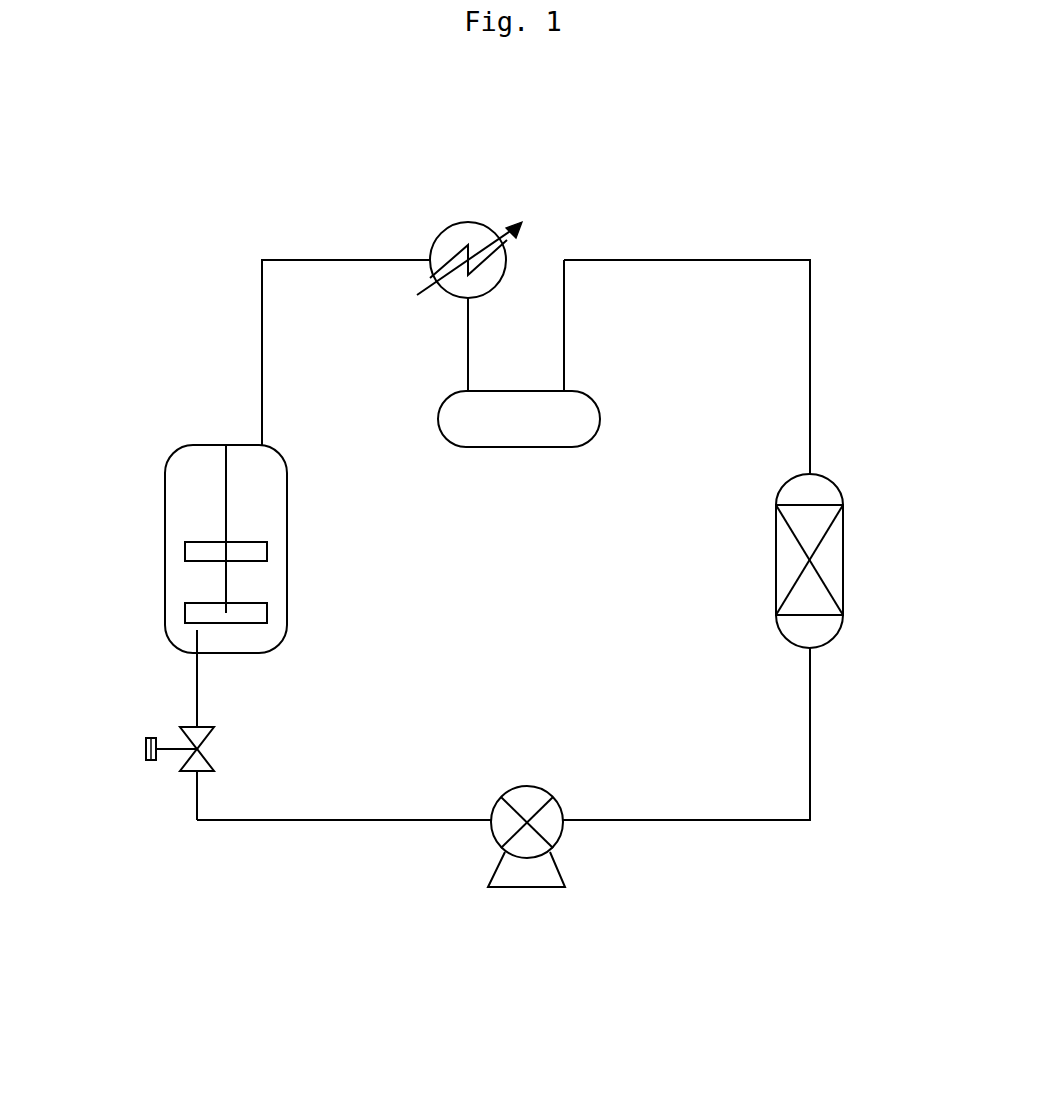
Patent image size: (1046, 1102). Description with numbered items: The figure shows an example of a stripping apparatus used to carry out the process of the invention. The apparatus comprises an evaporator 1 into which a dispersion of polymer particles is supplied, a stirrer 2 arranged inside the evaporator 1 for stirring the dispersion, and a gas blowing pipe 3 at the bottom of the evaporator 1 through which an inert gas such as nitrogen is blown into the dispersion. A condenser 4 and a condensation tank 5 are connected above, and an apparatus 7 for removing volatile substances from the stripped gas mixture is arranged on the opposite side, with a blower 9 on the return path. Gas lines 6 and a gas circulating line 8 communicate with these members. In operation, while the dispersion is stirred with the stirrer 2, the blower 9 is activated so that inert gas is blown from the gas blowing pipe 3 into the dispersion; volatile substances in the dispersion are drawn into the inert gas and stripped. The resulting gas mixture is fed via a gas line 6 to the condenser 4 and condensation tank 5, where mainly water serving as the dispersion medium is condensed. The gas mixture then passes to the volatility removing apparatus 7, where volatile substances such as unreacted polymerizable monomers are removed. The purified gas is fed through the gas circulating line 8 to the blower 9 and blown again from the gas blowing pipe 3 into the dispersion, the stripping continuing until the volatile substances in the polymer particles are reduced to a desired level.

The evaporator 1 is at (165, 487).
The stirrer 2 is at (195, 552).
The gas blowing pipe 3 is at (197, 638).
The condenser 4 is at (441, 233).
The condensation tank 5 is at (502, 447).
The gas lines 6 is at (262, 358).
The apparatus for removing volatile substances 7 is at (860, 552).
The gas circulating line 8 is at (811, 751).
The blower 9 is at (530, 890).